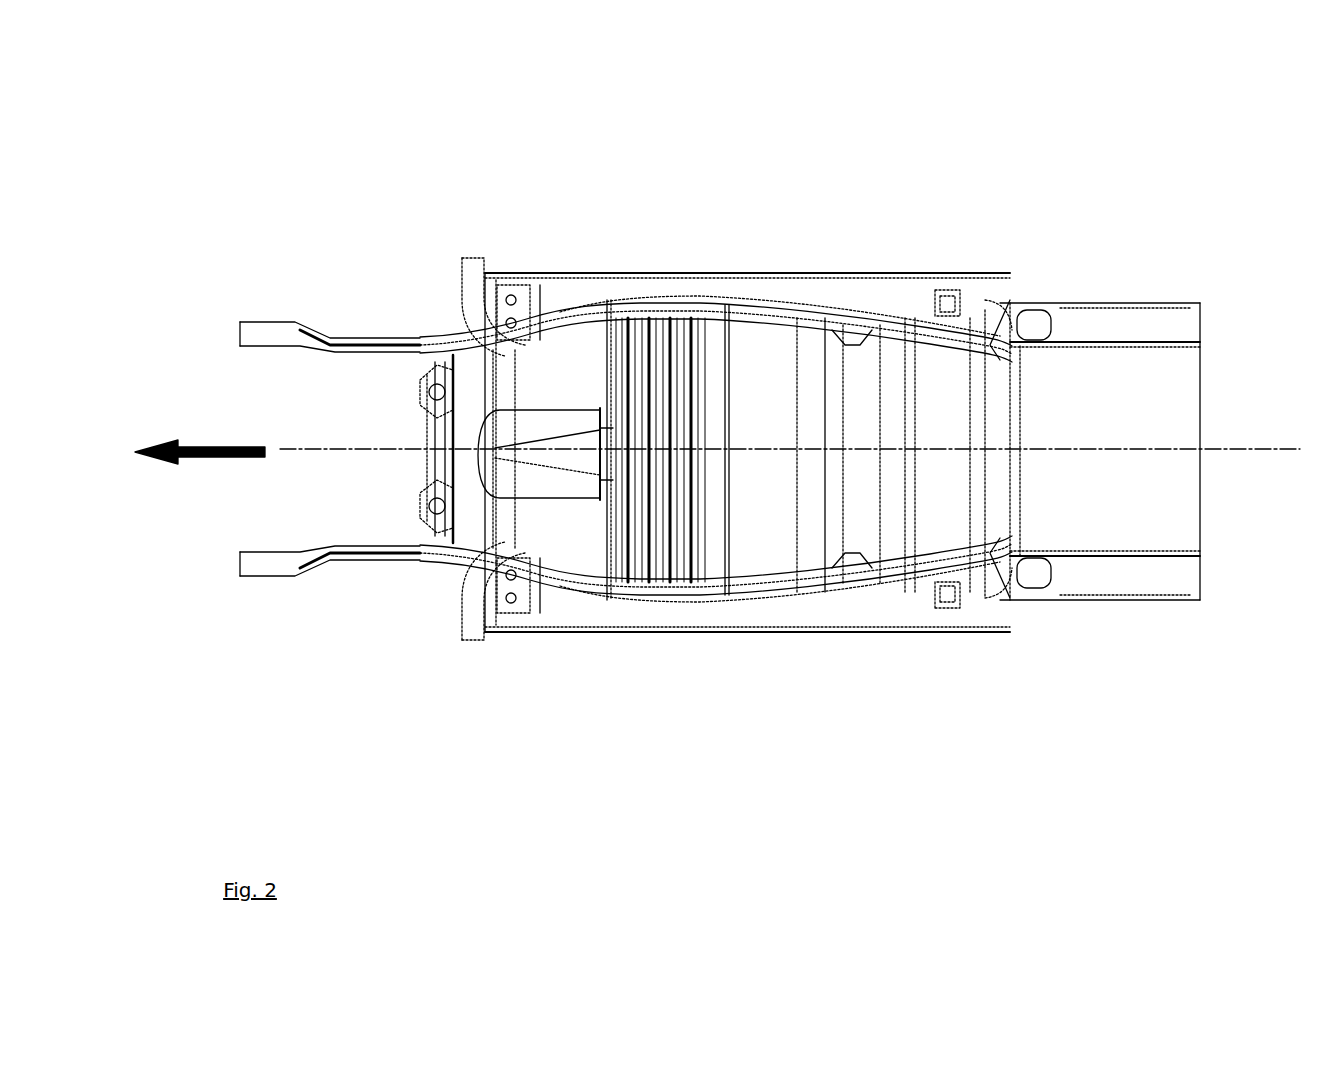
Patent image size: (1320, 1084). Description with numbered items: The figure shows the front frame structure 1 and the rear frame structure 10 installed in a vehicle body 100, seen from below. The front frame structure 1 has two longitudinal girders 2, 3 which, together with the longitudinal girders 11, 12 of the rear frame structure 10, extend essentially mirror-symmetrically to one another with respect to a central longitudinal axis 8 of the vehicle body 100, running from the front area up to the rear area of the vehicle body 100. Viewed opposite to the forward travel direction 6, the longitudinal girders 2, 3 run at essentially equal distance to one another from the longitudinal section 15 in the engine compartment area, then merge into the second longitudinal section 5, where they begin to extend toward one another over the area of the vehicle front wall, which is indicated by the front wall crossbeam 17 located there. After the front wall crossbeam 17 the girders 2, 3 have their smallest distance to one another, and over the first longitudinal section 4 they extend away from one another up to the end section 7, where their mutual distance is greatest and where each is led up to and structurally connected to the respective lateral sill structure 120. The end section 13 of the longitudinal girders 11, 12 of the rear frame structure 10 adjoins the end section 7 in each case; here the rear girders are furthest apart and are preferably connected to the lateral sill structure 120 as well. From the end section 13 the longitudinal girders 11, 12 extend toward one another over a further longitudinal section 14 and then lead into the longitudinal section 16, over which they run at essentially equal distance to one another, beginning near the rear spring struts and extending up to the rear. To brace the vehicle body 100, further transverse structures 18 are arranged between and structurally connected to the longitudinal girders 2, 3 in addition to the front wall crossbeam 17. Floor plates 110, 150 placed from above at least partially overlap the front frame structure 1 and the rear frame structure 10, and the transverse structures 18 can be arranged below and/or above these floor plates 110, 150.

The front frame structure 1 is at (368, 298).
The longitudinal girder 2 is at (573, 331).
The longitudinal girder 3 is at (388, 574).
The first longitudinal section 4 is at (600, 285).
The second longitudinal section 5 is at (442, 352).
The forward travel direction 6 is at (190, 438).
The end section 7 is at (680, 300).
The central longitudinal axis 8 is at (1236, 448).
The rear frame structure 10 is at (1024, 276).
The longitudinal girder 11 is at (822, 280).
The longitudinal girder 12 is at (996, 594).
The end section 13 is at (795, 300).
The further longitudinal section 14 is at (905, 305).
The longitudinal section 15 is at (258, 325).
The longitudinal section 16 is at (1140, 330).
The front wall crossbeam 17 is at (440, 492).
The transverse structures 18 is at (720, 600).
The vehicle body 100 is at (758, 172).
The floor plate 110 is at (755, 370).
The lateral sill structure 120 is at (608, 276).
The floor plate 150 is at (1110, 510).